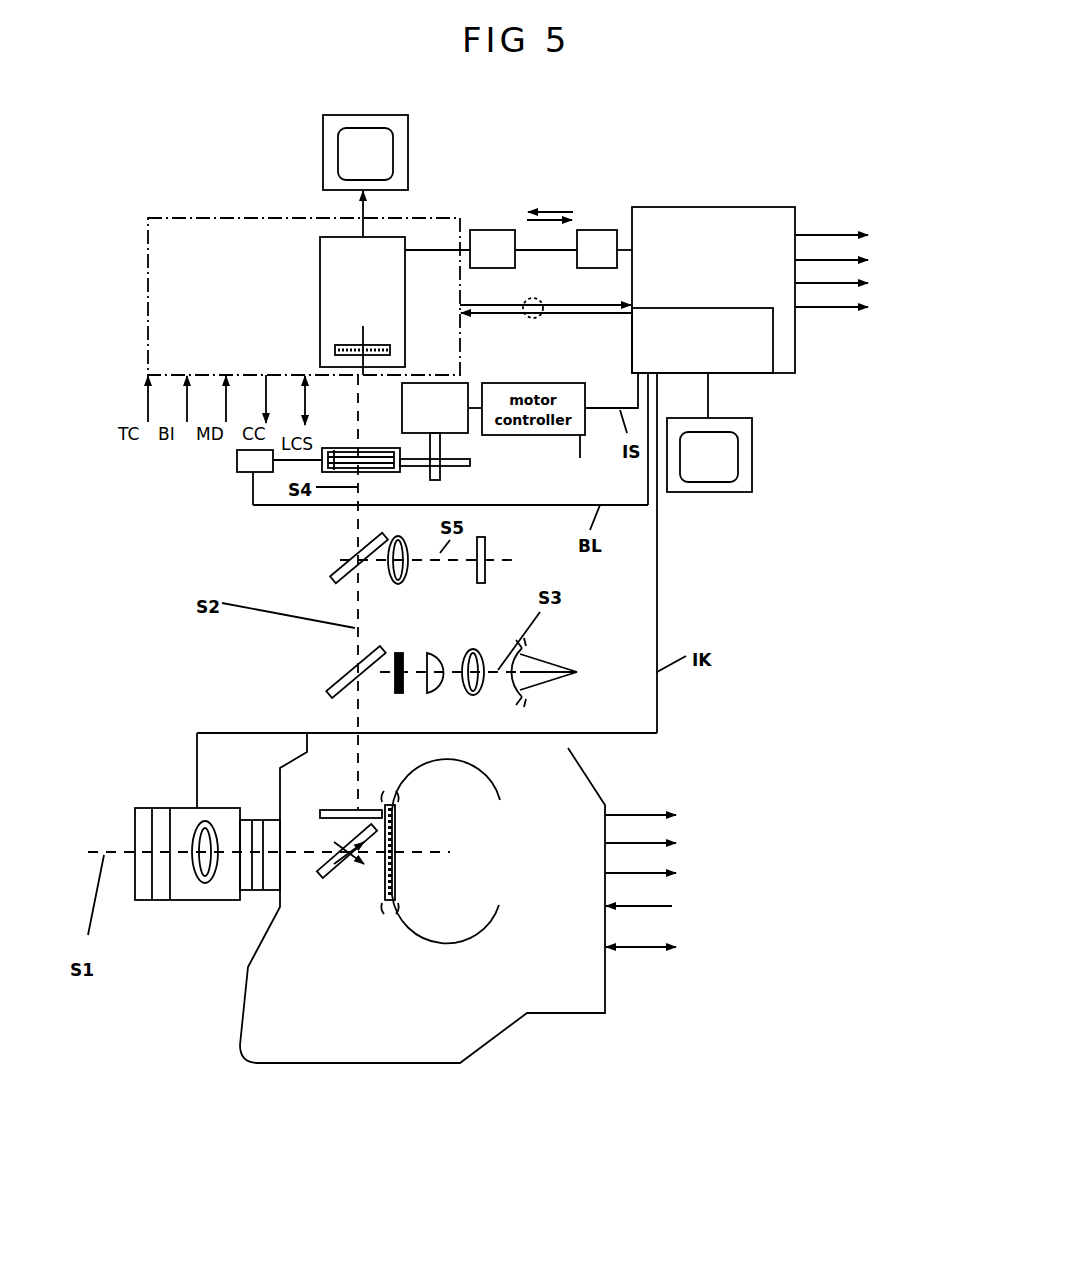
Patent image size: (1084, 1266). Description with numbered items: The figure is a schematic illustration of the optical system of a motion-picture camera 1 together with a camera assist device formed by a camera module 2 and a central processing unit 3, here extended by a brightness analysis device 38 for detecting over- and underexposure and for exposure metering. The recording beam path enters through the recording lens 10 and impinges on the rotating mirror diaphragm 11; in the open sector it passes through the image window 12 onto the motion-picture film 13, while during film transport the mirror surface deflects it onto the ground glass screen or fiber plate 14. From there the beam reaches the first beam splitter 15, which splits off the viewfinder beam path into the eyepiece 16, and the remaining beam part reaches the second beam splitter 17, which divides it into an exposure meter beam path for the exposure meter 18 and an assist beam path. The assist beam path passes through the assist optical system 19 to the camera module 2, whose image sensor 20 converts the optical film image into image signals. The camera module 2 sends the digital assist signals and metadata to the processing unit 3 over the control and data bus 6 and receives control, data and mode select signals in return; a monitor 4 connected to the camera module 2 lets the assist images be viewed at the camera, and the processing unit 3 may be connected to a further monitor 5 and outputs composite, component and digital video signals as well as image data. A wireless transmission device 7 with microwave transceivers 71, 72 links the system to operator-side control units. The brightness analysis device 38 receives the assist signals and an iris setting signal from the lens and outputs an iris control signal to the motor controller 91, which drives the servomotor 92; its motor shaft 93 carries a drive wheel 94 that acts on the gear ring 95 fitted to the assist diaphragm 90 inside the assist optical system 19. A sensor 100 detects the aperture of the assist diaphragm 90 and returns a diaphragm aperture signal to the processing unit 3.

The motion-picture camera 1 is at (575, 970).
The camera module 2 is at (440, 230).
The processing unit 3 is at (725, 215).
The monitor 4 is at (350, 150).
The monitor 5 is at (738, 492).
The control and data bus 6 is at (533, 318).
The wireless transmission device 7 is at (570, 198).
The recording lens 10 is at (200, 882).
The rotating mirror diaphragm 11 is at (325, 878).
The image window 12 is at (396, 845).
The motion-picture film 13 is at (417, 950).
The ground glass screen or fiber plate 14 is at (318, 809).
The first beam splitter 15 is at (340, 678).
The eyepiece 16 is at (433, 661).
The second beam splitter 17 is at (335, 568).
The exposure meter 18 is at (488, 548).
The assist optical system 19 is at (385, 473).
The image sensor 20 is at (390, 350).
The brightness analysis device 38 is at (745, 373).
The microwave transceiver 71 is at (487, 238).
The microwave transceiver 72 is at (603, 228).
The assist diaphragm 90 is at (335, 457).
The motor controller 91 is at (581, 459).
The servomotor 92 is at (402, 408).
The motor shaft 93 is at (441, 446).
The drive wheel 94 is at (463, 468).
The gear ring 95 is at (322, 463).
The sensor 100 is at (237, 462).